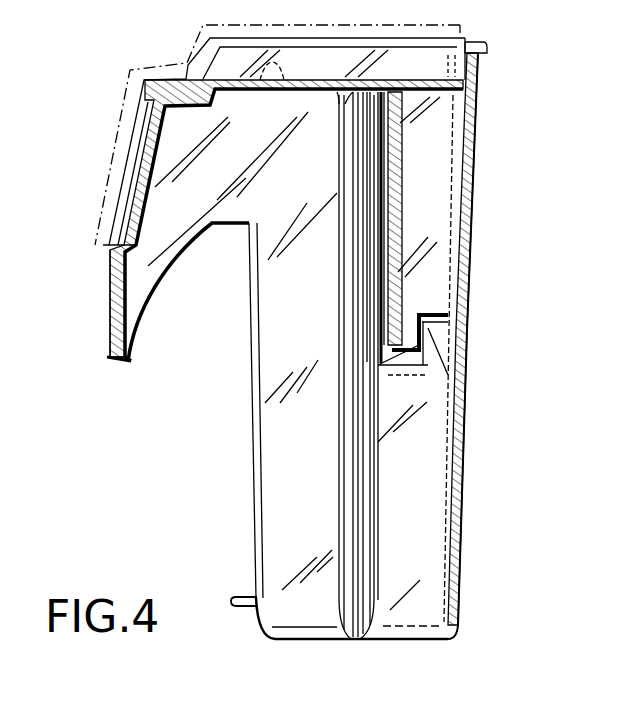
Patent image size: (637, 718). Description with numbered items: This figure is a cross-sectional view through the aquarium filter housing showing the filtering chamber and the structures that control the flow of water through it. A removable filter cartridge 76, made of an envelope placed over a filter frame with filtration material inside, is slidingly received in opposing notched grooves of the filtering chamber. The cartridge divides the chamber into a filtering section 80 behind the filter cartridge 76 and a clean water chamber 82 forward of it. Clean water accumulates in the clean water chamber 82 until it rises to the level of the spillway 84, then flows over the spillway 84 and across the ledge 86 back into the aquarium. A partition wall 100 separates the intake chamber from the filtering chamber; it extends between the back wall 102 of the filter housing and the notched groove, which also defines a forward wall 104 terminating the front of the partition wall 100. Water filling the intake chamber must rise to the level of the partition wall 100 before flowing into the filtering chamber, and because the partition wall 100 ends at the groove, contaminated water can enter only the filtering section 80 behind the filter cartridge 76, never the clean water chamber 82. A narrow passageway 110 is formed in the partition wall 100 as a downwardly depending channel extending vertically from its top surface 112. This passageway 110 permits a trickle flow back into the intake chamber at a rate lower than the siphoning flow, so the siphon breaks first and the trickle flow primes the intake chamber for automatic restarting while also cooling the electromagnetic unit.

The removable filter cartridge 76 is at (363, 506).
The filtering section 80 is at (430, 534).
The clean water chamber 82 is at (287, 513).
The spillway 84 is at (184, 252).
The ledge 86 is at (119, 361).
The partition wall 100 is at (440, 340).
The back wall 102 is at (468, 222).
The forward wall 104 is at (392, 162).
The narrow passageway 110 is at (408, 313).
The top surface 112 is at (430, 317).